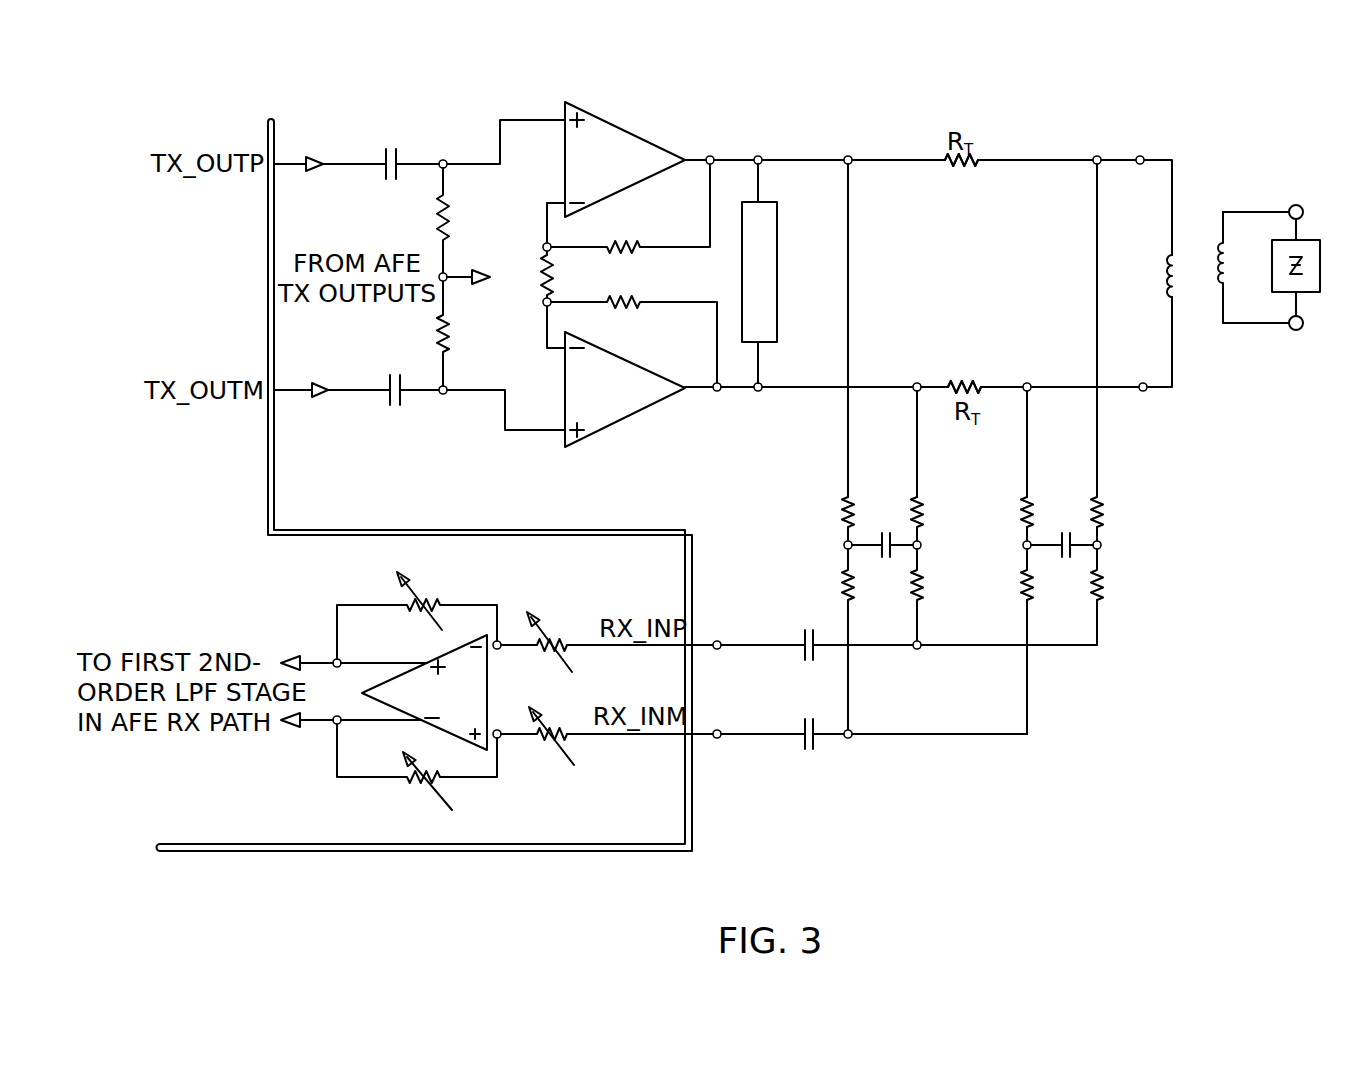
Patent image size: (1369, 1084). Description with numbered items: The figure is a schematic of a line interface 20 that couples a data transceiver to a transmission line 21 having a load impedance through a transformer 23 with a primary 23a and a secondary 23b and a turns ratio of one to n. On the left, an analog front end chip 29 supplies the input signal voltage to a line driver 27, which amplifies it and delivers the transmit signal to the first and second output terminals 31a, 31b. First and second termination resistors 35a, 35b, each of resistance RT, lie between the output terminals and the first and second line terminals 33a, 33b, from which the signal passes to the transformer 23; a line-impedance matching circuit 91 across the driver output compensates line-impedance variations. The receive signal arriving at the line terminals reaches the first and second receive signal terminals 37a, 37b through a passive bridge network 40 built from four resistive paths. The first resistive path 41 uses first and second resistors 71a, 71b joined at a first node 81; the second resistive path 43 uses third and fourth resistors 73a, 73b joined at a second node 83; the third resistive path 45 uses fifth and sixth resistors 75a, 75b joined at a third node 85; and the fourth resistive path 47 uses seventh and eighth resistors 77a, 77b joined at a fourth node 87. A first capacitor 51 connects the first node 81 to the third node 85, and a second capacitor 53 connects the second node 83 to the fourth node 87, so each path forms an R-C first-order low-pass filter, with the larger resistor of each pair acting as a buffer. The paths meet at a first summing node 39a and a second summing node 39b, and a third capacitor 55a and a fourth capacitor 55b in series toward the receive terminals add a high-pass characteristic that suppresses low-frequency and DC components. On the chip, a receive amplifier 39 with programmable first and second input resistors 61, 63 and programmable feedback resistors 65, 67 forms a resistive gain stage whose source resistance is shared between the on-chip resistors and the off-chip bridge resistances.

The line interface 20 is at (1090, 128).
The transmission line 21 is at (1250, 211).
The transformer 23 is at (1197, 239).
The primary 23a is at (1222, 256).
The secondary 23b is at (1165, 262).
The line driver 27 is at (626, 103).
The analog front end (AFE) chip 29 is at (465, 852).
The first output terminal 31a is at (760, 156).
The second output terminal 31b is at (758, 391).
The first line terminal 33a is at (1140, 165).
The second line terminal 33b is at (1143, 383).
The first termination resistor 35a is at (978, 162).
The second termination resistor 35b is at (982, 385).
The first receive signal terminal 37a is at (717, 641).
The second receive signal terminal 37b is at (717, 738).
The receive amplifier 39 is at (445, 697).
The first summing node 39a is at (919, 649).
The second summing node 39b is at (850, 738).
The bridge network 40 is at (1085, 682).
The first resistive path 41 is at (1097, 432).
The second resistive path 43 is at (917, 432).
The third resistive path 45 is at (1027, 432).
The fourth resistive path 47 is at (848, 430).
The first capacitor 51 is at (1062, 537).
The second capacitor 53 is at (882, 537).
The third capacitor 55a is at (800, 650).
The fourth capacitor 55b is at (810, 752).
The first input resistor 61 is at (548, 635).
The second input resistor 63 is at (548, 745).
The programmable feedback resistor 65 is at (421, 598).
The programmable feedback resistor 67 is at (430, 792).
The first resistor 71a is at (1103, 500).
The second resistor 71b is at (1103, 600).
The third resistor 73a is at (930, 522).
The fourth resistor 73b is at (920, 594).
The fifth resistor 75a is at (1018, 520).
The sixth resistor 75b is at (1018, 595).
The seventh resistor 77a is at (840, 497).
The eighth resistor 77b is at (842, 585).
The first node 81 is at (1101, 547).
The second node 83 is at (923, 546).
The third node 85 is at (1018, 548).
The fourth node 87 is at (844, 545).
The line-impedance matching circuit 91 is at (742, 257).